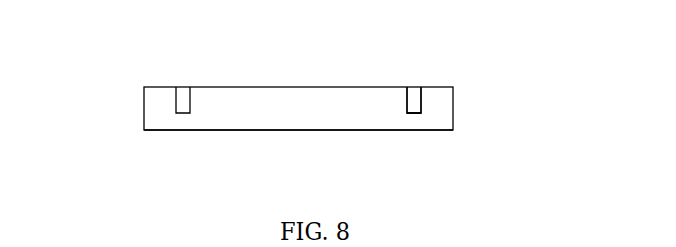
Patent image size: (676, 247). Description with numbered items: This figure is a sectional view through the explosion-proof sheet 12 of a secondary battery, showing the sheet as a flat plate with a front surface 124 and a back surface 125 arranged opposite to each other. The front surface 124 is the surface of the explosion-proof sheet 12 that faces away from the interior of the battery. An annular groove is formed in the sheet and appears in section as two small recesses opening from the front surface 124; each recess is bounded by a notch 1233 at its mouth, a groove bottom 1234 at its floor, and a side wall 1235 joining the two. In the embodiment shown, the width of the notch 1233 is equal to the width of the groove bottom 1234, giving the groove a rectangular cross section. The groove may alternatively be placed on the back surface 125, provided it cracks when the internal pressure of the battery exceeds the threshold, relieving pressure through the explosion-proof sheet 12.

The explosion-proof sheet 12 is at (144, 102).
The front surface 124 is at (237, 86).
The back surface 125 is at (237, 130).
The notch 1233 is at (413, 87).
The groove bottom 1234 is at (413, 113).
The side wall 1235 is at (422, 100).